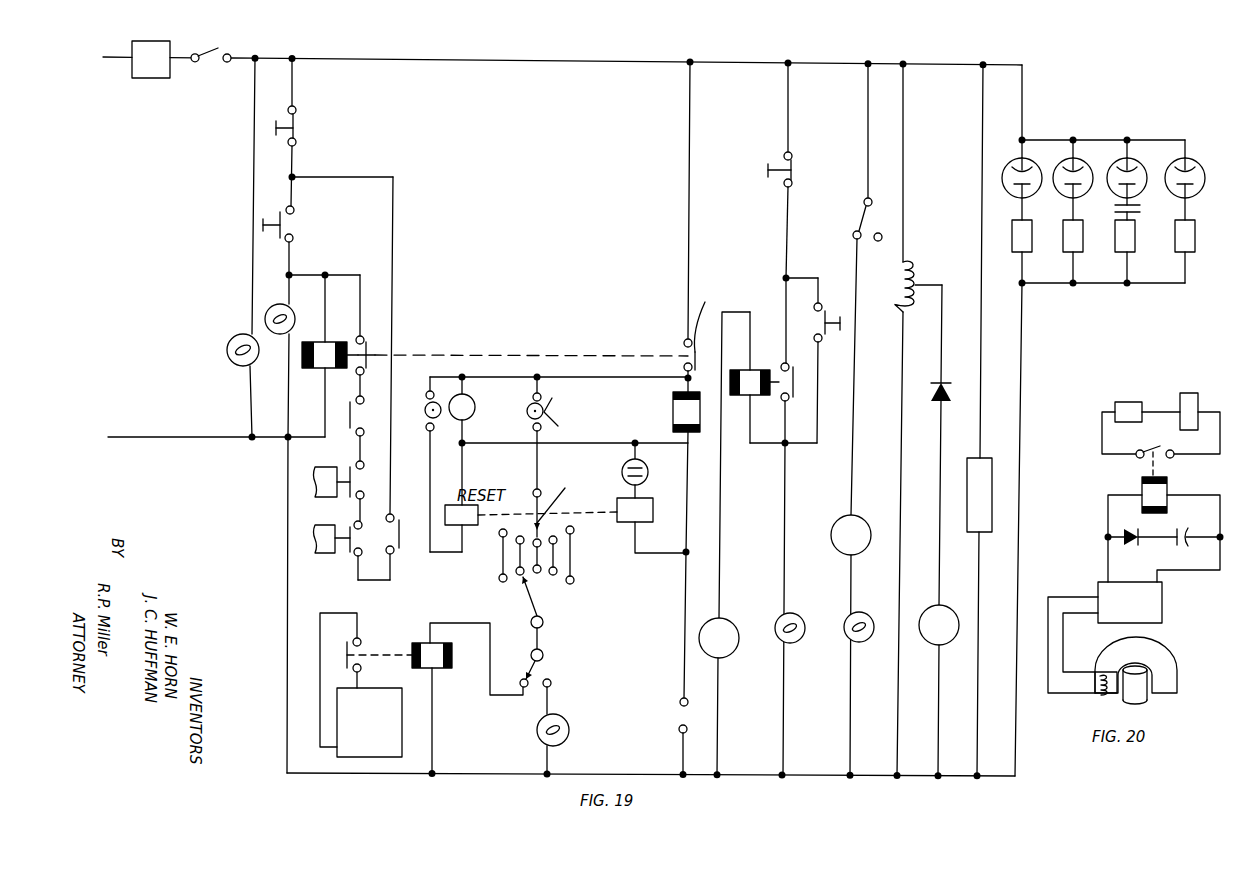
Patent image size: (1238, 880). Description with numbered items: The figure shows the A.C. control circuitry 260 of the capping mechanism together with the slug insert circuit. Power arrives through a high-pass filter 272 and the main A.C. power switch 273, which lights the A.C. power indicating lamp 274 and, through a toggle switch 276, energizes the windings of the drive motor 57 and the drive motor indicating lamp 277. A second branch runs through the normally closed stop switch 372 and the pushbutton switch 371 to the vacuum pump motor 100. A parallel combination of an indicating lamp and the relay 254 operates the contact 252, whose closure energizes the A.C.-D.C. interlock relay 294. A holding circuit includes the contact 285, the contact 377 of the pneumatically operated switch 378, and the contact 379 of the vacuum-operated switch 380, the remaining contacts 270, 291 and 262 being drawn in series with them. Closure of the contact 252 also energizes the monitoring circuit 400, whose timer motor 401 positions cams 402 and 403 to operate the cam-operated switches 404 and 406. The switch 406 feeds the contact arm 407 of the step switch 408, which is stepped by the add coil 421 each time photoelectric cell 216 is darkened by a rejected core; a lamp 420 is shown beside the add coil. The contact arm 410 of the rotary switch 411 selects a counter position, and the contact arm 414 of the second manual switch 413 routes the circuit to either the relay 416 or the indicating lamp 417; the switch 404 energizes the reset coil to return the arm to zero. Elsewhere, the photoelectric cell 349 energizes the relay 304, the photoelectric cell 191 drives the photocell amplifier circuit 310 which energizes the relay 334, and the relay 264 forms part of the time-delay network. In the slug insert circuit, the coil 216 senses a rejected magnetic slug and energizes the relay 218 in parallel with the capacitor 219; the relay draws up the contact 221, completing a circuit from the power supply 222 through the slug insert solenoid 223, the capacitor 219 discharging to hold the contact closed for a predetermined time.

In FIG. 19, the high-pass filter 272 is at (146, 78).
In FIG. 19, the main A.C. power switch 273 is at (212, 48).
In FIG. 19, the push button switch 270 is at (304, 120).
In FIG. 19, the relay 264 is at (276, 216).
In FIG. 19, the A.C. power indicating lamp 274 is at (240, 334).
In FIG. 19, the A.C. control circuitry 260 is at (222, 372).
In FIG. 19, the relay 254 is at (318, 370).
In FIG. 19, the relay contact 291 is at (364, 318).
In FIG. 19, the contact 285 is at (354, 436).
In FIG. 19, the contact 377 is at (362, 490).
In FIG. 19, the pneumatically operated switch 378 is at (326, 498).
In FIG. 19, the contact 379 is at (348, 556).
In FIG. 19, the vacuum-operated switch 380 is at (327, 556).
In FIG. 19, the contact 262 is at (400, 548).
In FIG. 19, the relay 416 is at (436, 668).
In FIG. 19, the cam-operated switch 404 is at (424, 398).
In FIG. 19, the cam 402 is at (436, 420).
In FIG. 19, the timer motor 401 is at (465, 402).
In FIG. 19, the cam 403 is at (532, 422).
In FIG. 19, the cam-operated switch 406 is at (566, 417).
In FIG. 19, the monitoring circuit 400 is at (542, 372).
In FIG. 19, the contact arm 407 is at (557, 484).
In FIG. 19, the contact arm 410 is at (540, 613).
In FIG. 19, the manually-positioned rotary switch 411 is at (548, 598).
In FIG. 19, the contact arm 414 is at (544, 659).
In FIG. 19, the second manual switch 413 is at (556, 672).
In FIG. 19, the indicating lamp 417 is at (567, 722).
In FIG. 19, the indicator lamp 420 is at (645, 473).
In FIG. 19, the add coil 421 is at (640, 525).
In FIG. 19, the step switch 408 is at (610, 545).
In FIG. 19, the contact 252 is at (706, 216).
In FIG. 19, the A.C.-D.C. interlock relay 294 is at (672, 409).
In FIG. 19, the vacuum pump motor 100 is at (728, 620).
In FIG. 19, the toggle switch 276 is at (858, 218).
In FIG. 19, the stop switch 372 is at (795, 160).
In FIG. 19, the pushbutton switch 371 is at (822, 342).
In FIG. 19, the drive motor 57 is at (840, 547).
In FIG. 19, the drive motor indicating lamp 277 is at (858, 642).
In FIG. 19, the photoelectric cell 349 is at (1010, 166).
In FIG. 19, the relay 304 is at (1025, 253).
In FIG. 19, the photocell amplifier circuit 310 is at (1113, 207).
In FIG. 19, the relay 334 is at (1128, 253).
In FIG. 19, the photoelectric cell 191 is at (1140, 197).
In FIG. 20, the power supply 222 is at (1122, 402).
In FIG. 20, the slug insert solenoid 223 is at (1192, 393).
In FIG. 20, the contact 221 is at (1146, 446).
In FIG. 20, the relay 218 is at (1167, 488).
In FIG. 20, the capacitor 219 is at (1178, 530).
In FIG. 20, the magnetically responsive coil 216 is at (1105, 698).